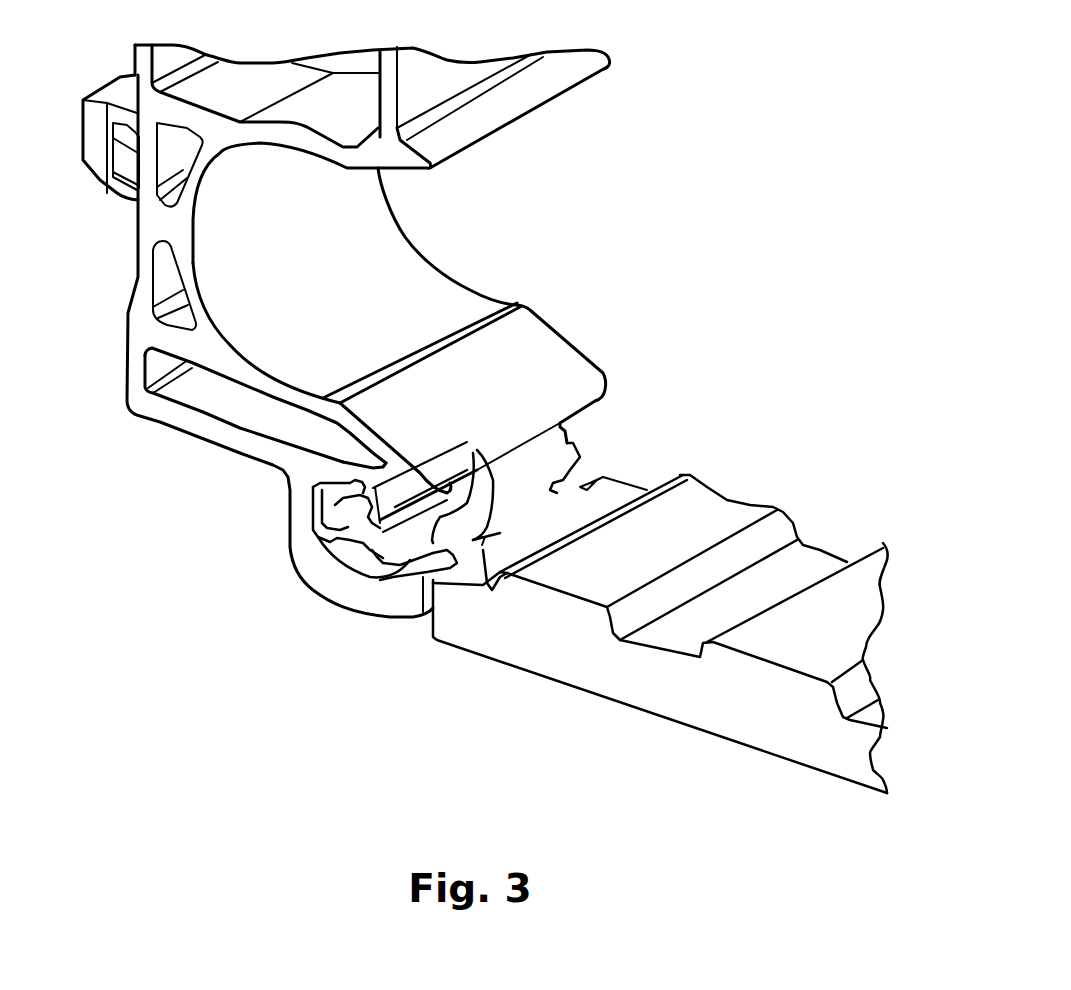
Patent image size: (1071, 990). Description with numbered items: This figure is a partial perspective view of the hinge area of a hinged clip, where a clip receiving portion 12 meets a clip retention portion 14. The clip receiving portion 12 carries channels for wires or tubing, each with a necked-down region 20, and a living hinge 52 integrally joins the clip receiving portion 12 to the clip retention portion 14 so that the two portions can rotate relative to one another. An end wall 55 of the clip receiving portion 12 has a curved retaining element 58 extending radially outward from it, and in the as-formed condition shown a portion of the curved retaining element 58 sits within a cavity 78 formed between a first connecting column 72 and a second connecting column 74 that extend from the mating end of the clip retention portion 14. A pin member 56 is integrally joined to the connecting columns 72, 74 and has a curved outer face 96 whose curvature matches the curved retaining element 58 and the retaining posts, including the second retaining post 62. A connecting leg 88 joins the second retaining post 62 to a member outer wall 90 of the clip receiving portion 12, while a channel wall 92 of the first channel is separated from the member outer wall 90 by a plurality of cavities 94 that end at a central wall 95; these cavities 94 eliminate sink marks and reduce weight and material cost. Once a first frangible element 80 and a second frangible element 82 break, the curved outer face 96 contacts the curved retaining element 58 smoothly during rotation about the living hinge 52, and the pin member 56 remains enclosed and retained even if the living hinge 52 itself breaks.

The clip receiving portion 12 is at (135, 273).
The clip retention portion 14 is at (712, 733).
The necked-down region 20 is at (520, 303).
The living hinge 52 is at (363, 507).
The end wall 55 is at (563, 368).
The pin member 56 is at (348, 553).
The curved retaining element 58 is at (543, 453).
The second retaining post 62 is at (390, 595).
The first connecting column 72 is at (607, 475).
The second connecting column 74 is at (417, 578).
The cavity 78 is at (481, 548).
The first frangible element 80 is at (603, 477).
The second frangible element 82 is at (427, 585).
The connecting leg 88 is at (287, 507).
The member outer wall 90 is at (255, 455).
The channel wall 92 is at (257, 382).
The cavities 94 is at (190, 395).
The central wall 95 is at (380, 67).
The curved outer face 96 is at (358, 573).